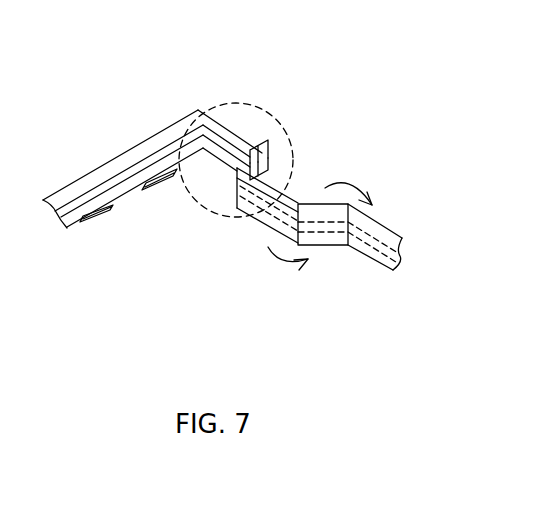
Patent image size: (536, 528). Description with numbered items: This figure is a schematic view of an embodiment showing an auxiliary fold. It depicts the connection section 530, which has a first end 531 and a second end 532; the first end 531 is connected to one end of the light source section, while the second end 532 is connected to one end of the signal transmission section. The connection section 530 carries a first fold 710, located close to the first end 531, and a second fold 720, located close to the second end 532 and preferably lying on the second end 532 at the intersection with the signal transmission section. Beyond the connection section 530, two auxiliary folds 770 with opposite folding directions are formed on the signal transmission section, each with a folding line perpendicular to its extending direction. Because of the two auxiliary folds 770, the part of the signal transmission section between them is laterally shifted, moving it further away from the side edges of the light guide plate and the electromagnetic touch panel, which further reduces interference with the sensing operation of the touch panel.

The connection section 530 is at (217, 110).
The first end 531 is at (198, 108).
The second end 532 is at (263, 168).
The first fold 710 is at (253, 152).
The second fold 720 is at (237, 181).
The auxiliary fold 770 is at (282, 225).